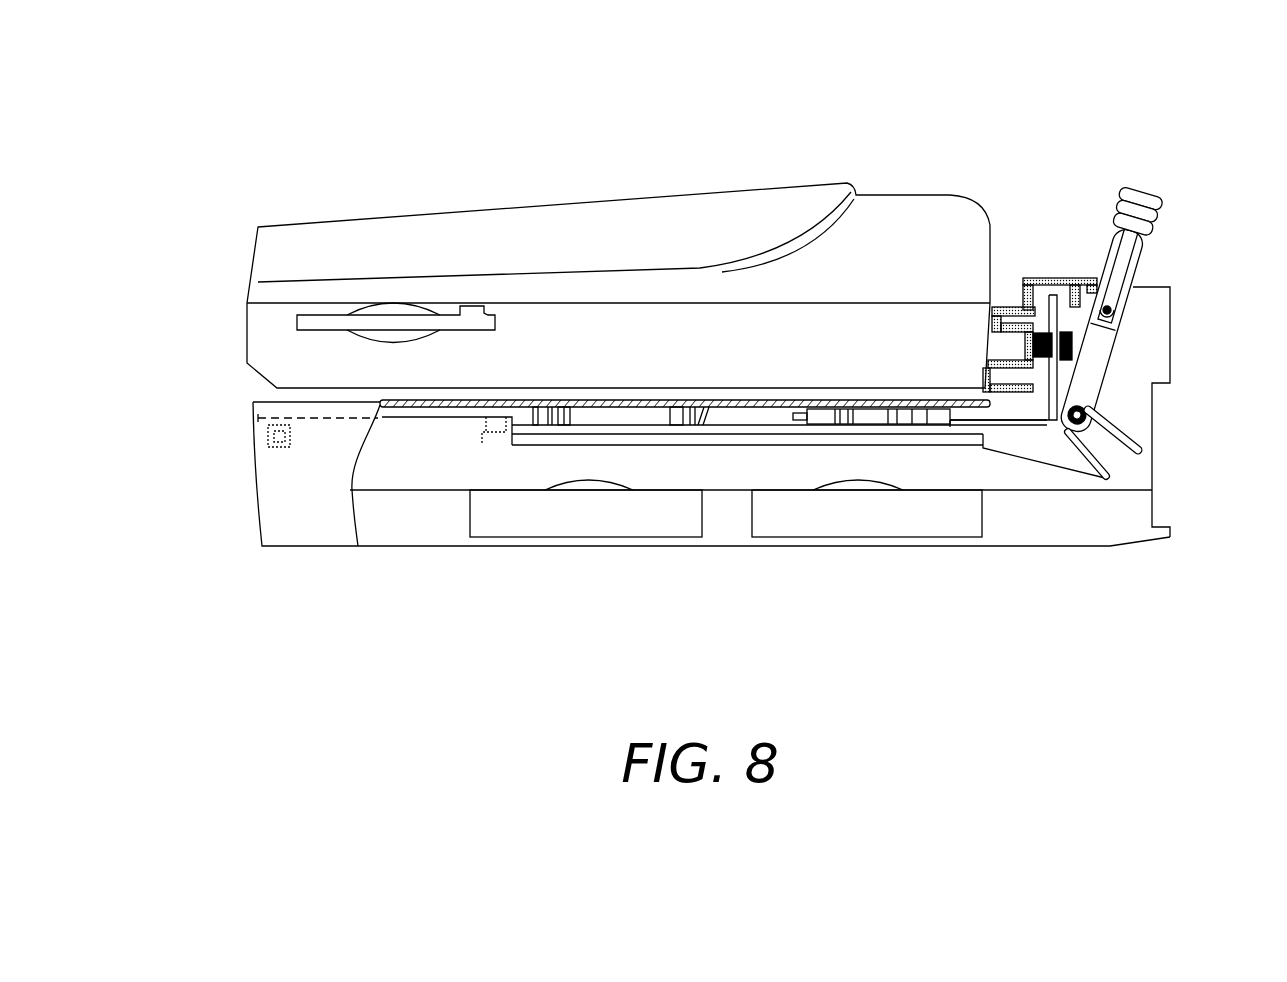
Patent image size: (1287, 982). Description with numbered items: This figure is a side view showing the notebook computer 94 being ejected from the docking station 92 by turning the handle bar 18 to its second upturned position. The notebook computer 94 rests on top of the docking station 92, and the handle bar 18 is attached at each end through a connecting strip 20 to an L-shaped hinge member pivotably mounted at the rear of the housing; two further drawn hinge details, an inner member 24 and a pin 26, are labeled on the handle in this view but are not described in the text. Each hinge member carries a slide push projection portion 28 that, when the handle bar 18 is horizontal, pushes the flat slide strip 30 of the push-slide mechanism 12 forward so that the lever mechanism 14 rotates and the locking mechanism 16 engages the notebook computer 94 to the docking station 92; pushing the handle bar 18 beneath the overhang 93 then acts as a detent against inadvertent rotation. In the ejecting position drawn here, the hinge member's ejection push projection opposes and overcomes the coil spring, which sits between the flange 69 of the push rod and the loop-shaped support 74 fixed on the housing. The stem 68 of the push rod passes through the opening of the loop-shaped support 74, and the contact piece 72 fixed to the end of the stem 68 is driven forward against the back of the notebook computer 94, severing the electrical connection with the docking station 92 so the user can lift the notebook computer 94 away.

The push-slide mechanism 12 is at (893, 434).
The lever mechanism 14 is at (436, 428).
The locking mechanism 16 is at (262, 436).
The handle bar 18 is at (1145, 208).
The connecting strip 20 is at (1132, 267).
The inner rod 24 is at (1112, 293).
The pin 26 is at (1112, 311).
The slide push projection portion 28 is at (1137, 455).
The flat slide strip 30 is at (1107, 480).
The stem 68 is at (1043, 360).
The flange 69 is at (1066, 332).
The contact piece 72 is at (1003, 307).
The loop-shaped support 74 is at (1046, 333).
The docking station 92 is at (731, 537).
The overhang 93 is at (1163, 387).
The notebook computer 94 is at (731, 190).